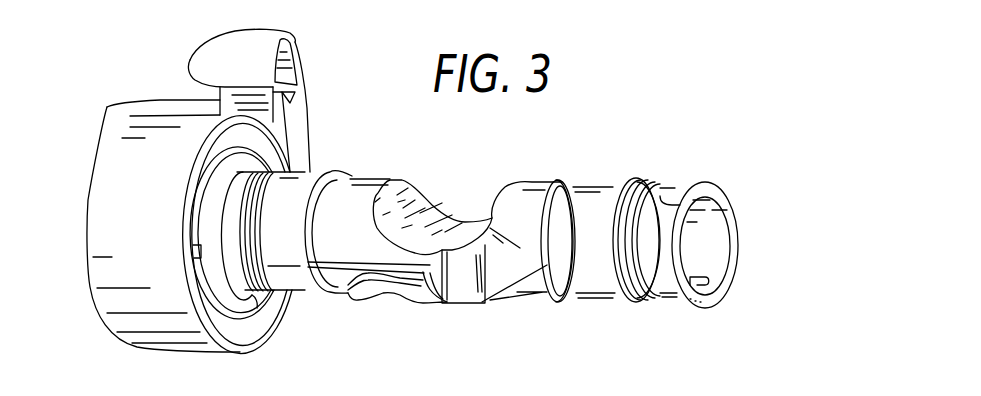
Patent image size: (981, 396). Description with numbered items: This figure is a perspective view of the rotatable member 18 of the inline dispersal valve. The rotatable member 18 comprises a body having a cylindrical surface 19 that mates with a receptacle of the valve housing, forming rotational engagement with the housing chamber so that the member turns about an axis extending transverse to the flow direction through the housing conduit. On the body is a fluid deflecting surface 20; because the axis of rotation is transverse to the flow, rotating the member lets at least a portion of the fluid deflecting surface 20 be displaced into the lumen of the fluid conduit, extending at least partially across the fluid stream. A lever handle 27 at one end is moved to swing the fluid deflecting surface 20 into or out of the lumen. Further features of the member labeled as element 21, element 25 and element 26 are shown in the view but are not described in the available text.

The rotatable member 18 is at (558, 157).
The cylindrical surface 19 is at (310, 293).
The fluid deflecting surface 20 is at (415, 202).
The ring 21 is at (342, 172).
The collar 25 is at (261, 296).
The ring 26 is at (643, 305).
The lever handle 27 is at (119, 103).